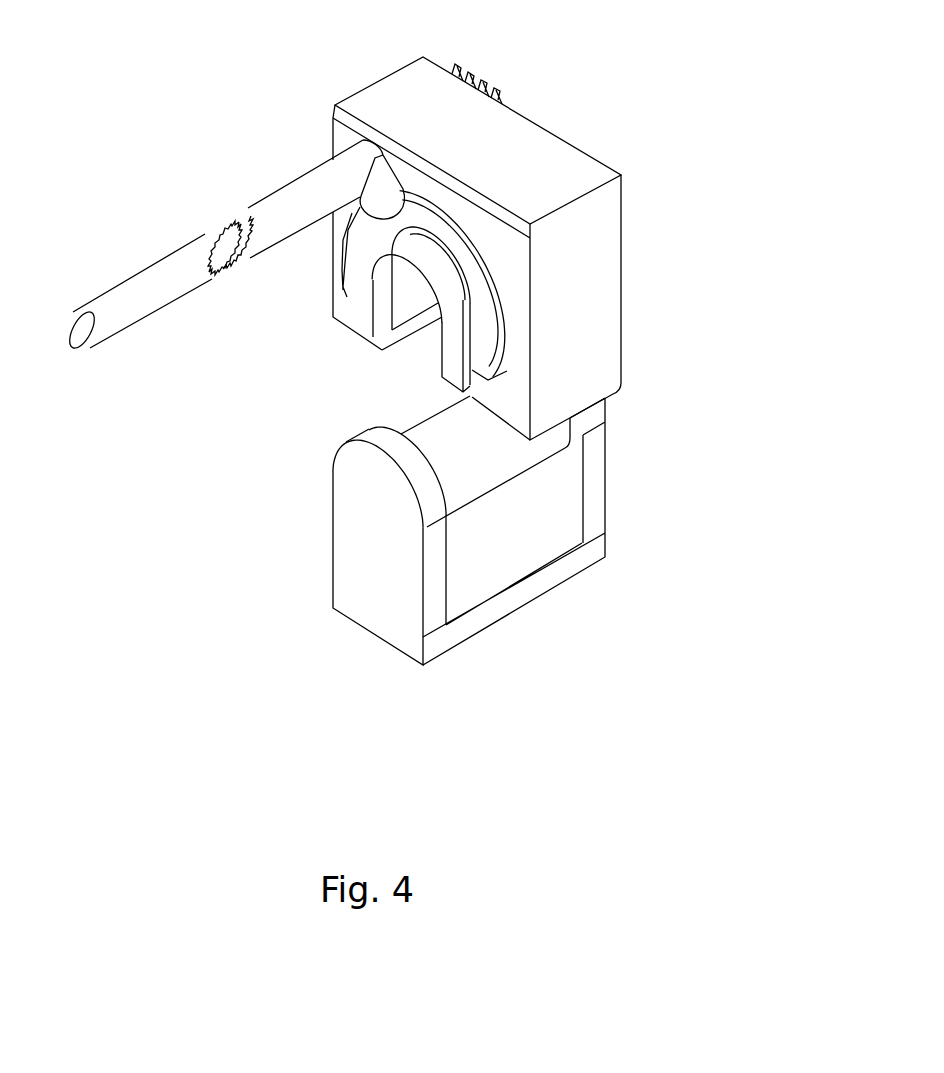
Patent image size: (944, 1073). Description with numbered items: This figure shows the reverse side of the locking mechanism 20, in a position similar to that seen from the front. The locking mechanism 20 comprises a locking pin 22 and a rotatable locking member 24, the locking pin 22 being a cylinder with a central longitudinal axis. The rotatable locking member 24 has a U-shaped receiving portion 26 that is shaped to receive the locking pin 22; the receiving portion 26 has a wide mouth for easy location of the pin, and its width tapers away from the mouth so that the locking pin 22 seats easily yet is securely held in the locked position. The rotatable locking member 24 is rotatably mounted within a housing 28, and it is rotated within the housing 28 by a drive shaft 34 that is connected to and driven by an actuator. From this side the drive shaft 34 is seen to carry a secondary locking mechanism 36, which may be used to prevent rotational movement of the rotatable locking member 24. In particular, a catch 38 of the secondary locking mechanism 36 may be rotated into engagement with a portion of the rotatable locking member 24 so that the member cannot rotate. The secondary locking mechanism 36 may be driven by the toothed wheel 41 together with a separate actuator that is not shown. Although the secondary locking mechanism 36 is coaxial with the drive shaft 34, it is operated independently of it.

The locking mechanism 20 is at (658, 158).
The locking pin 22 is at (370, 608).
The rotatable locking member 24 is at (478, 305).
The U-shaped receiving portion 26 is at (423, 350).
The housing 28 is at (535, 153).
The drive shaft 34 is at (118, 297).
The secondary locking mechanism 36 is at (290, 198).
The catch 38 is at (388, 168).
The toothed wheel 41 is at (243, 275).